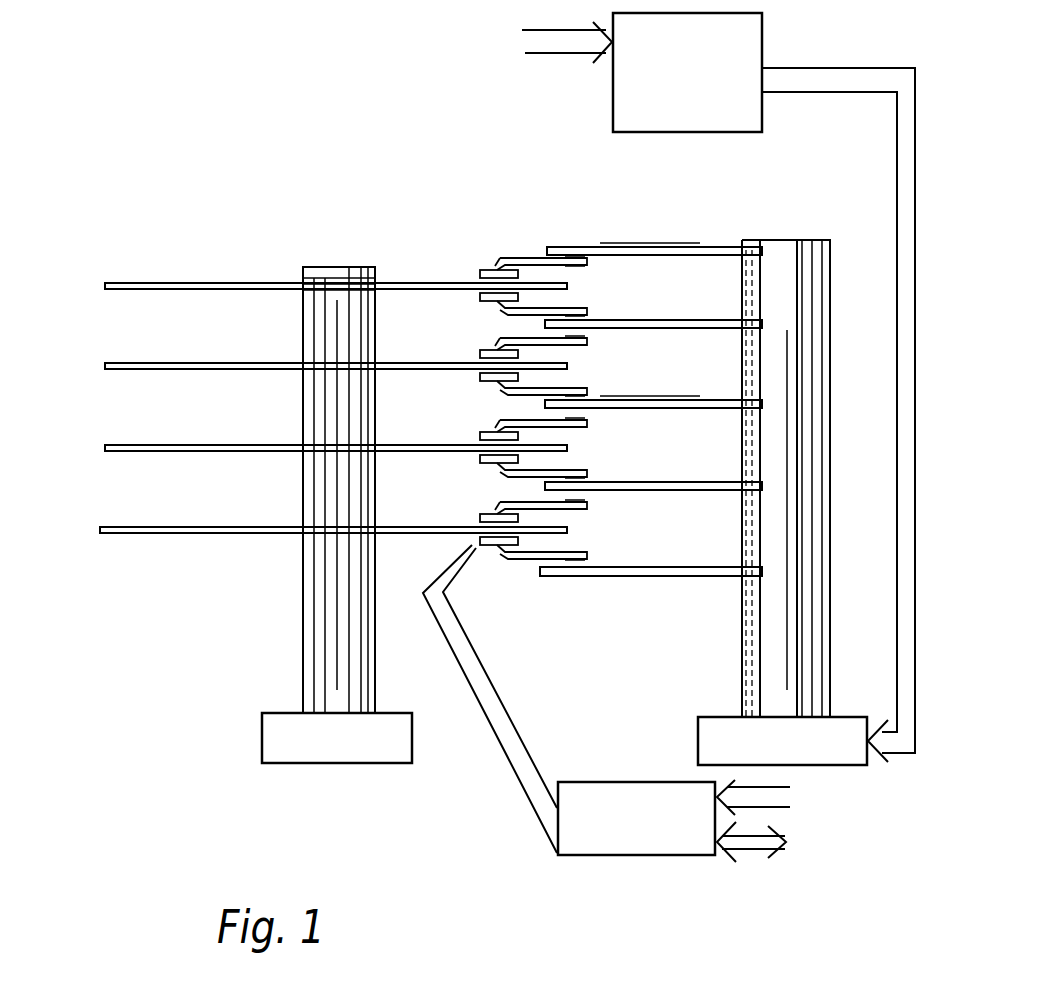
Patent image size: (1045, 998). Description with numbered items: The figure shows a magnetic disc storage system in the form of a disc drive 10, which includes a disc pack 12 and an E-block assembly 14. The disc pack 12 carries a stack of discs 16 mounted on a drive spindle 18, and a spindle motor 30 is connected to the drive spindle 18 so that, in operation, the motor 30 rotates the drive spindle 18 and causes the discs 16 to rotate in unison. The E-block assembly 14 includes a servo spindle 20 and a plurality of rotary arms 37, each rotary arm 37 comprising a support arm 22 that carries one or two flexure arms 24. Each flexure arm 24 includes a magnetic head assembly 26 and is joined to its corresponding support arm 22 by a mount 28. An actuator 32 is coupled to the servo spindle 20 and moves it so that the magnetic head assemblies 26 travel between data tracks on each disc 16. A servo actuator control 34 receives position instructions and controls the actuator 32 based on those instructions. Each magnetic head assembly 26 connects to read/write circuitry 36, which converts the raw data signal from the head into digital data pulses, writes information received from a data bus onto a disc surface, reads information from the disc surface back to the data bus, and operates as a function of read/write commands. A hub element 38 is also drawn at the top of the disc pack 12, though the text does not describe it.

The disc drive 10 is at (148, 790).
The disc pack 12 is at (135, 250).
The E-block assembly 14 is at (797, 237).
The discs 16 is at (110, 291).
The drive spindle 18 is at (318, 267).
The servo spindle 20 is at (758, 592).
The support arm 22 is at (655, 256).
The flexure arm 24 is at (505, 311).
The magnetic head assembly 26 is at (480, 274).
The mount 28 is at (573, 259).
The spindle motor 30 is at (263, 737).
The actuator 32 is at (705, 735).
The servo actuator control 34 is at (652, 132).
The read/write circuitry 36 is at (627, 782).
The rotary arm 37 is at (626, 247).
The disk hub / spacer 38 is at (198, 284).